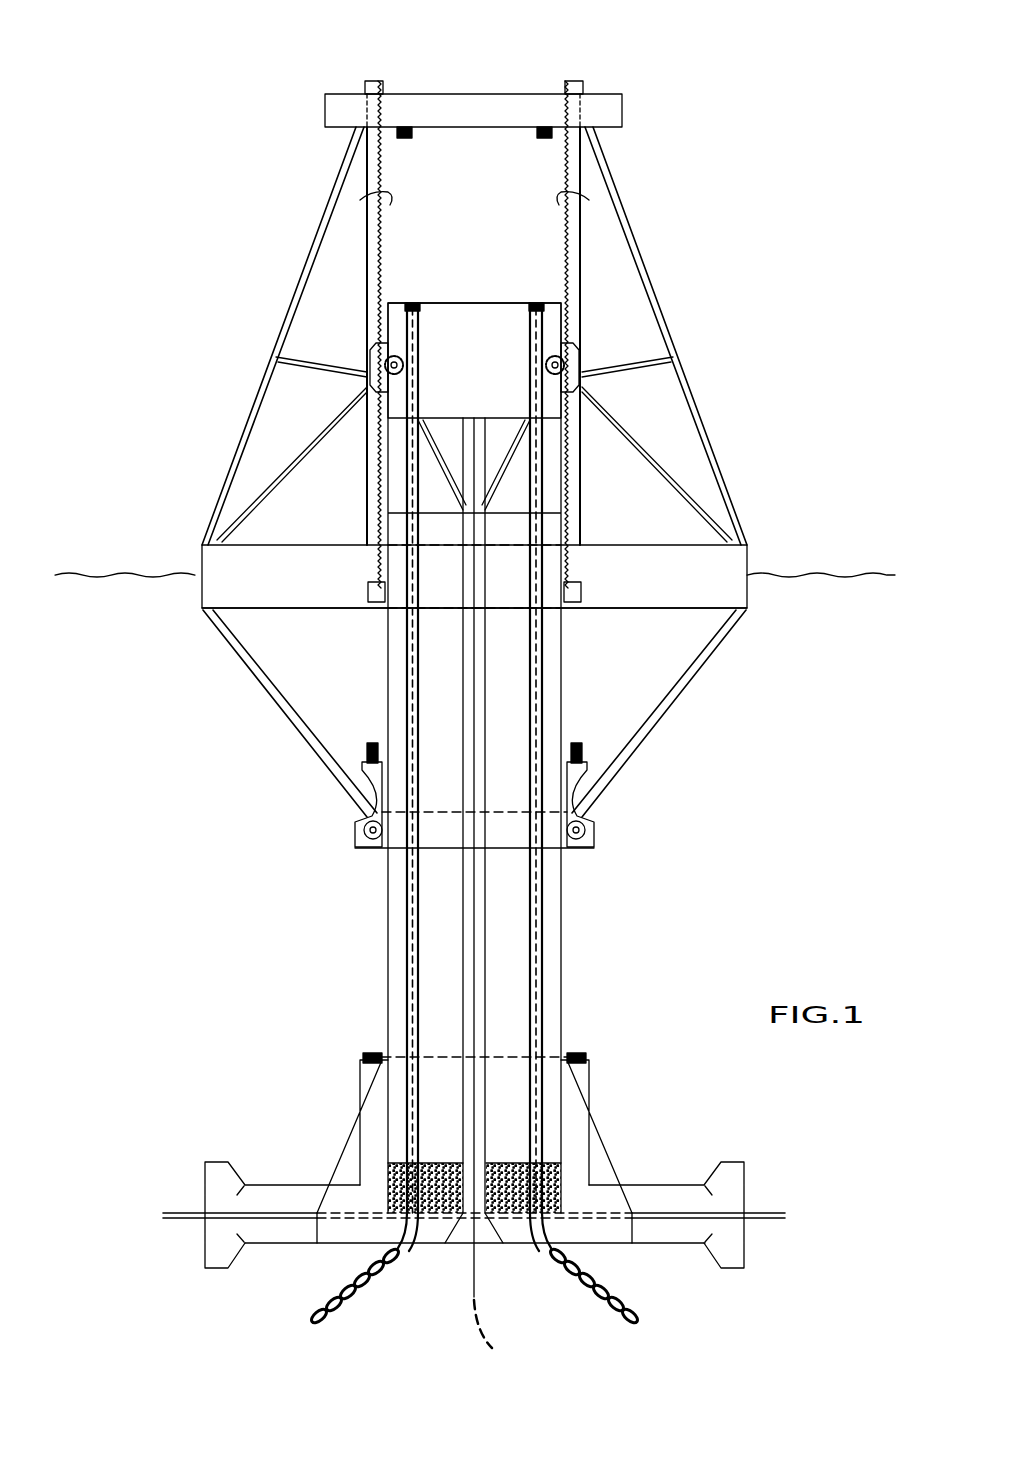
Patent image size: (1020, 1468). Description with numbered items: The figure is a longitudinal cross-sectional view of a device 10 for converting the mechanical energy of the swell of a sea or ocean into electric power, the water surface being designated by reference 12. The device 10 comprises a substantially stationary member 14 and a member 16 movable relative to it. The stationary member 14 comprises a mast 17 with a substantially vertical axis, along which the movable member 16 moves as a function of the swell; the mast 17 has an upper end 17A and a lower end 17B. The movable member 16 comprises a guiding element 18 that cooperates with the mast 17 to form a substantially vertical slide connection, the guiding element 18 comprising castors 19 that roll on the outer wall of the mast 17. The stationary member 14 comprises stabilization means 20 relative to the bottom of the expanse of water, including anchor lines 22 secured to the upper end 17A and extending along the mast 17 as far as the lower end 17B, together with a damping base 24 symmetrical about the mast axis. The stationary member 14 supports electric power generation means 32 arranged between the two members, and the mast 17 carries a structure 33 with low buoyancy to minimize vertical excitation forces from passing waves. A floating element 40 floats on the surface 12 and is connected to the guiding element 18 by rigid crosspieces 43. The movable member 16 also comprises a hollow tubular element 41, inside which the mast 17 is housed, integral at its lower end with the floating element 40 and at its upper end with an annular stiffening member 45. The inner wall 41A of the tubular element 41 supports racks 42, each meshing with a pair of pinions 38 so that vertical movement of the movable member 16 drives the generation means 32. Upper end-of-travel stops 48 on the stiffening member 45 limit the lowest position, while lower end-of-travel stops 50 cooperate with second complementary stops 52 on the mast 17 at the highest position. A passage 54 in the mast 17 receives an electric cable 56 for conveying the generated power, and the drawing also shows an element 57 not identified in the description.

The device 10 is at (205, 226).
The surface of the expanse of water 12 is at (135, 572).
The stationary member 14 is at (362, 920).
The movable member 16 is at (703, 304).
The mast 17 is at (548, 909).
The upper end of the mast 17A is at (473, 296).
The lower end of the mast 17B is at (430, 1252).
The guiding element 18 is at (616, 830).
The castors 19 is at (360, 832).
The stabilization means 20 is at (330, 1135).
The anchor lines 22 is at (622, 1306).
The damping base 24 is at (660, 1195).
The electric power generation means 32 is at (476, 371).
The structure with low buoyancy 33 is at (550, 452).
The pinions 38 is at (375, 348).
The floating element 40 is at (668, 572).
The hollow tubular element 41 is at (588, 250).
The inner wall 41A is at (385, 248).
The racks 42 is at (559, 190).
The crosspieces 43 is at (708, 660).
The annular stiffening member 45 is at (468, 118).
The upper end-of-travel stops 48 is at (548, 137).
The lower end-of-travel stops 50 is at (581, 744).
The second complementary stops 52 is at (584, 602).
The passage 54 is at (488, 955).
The electric cable 56 is at (480, 1266).
The stop block 57 is at (577, 1052).